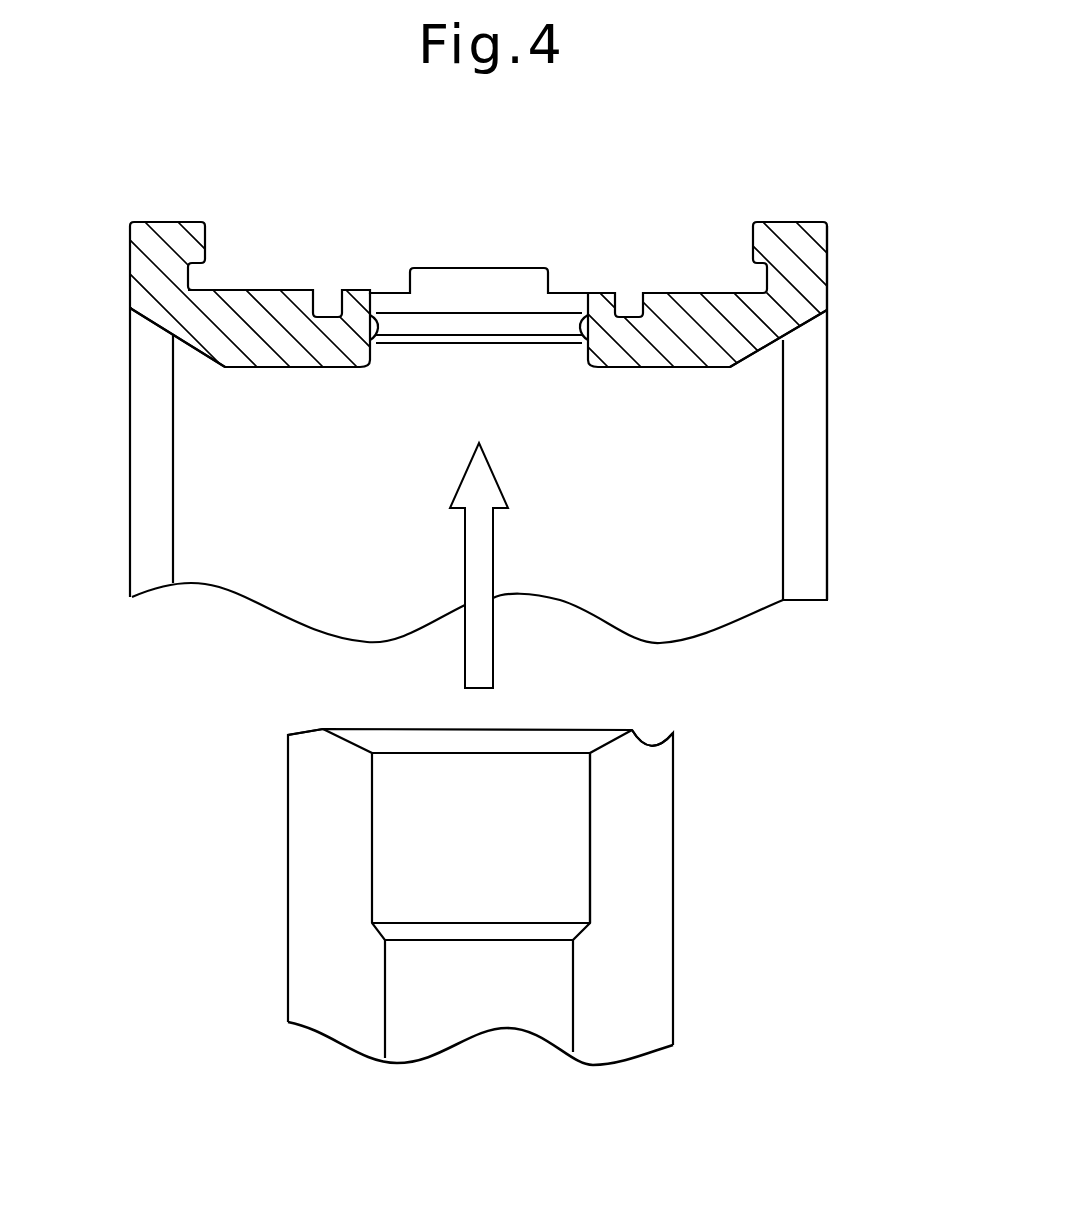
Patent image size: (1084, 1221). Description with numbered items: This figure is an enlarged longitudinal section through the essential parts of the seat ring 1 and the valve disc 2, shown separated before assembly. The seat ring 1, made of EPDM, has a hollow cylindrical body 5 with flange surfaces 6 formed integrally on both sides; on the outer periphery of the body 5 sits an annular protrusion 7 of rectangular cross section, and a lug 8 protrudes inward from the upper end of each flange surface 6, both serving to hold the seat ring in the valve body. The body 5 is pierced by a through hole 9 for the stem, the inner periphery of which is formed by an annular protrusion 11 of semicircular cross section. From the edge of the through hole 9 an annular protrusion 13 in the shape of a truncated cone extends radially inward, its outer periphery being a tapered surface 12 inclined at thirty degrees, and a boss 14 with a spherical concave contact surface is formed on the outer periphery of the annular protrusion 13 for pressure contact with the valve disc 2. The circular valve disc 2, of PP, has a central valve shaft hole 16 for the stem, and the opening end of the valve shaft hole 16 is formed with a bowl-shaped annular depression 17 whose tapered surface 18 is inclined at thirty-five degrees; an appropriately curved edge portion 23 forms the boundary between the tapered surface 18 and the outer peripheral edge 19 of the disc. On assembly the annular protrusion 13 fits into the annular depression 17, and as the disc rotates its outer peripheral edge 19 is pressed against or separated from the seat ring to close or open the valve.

The seat ring 1 is at (655, 214).
The valve disc 2 is at (722, 891).
The body 5 is at (268, 327).
The flange surface 6 is at (828, 268).
The annular protrusion 7 is at (493, 267).
The lug 8 is at (760, 243).
The through hole 9 is at (452, 360).
The annular protrusion 11 is at (590, 327).
The tapered surface 12 is at (642, 352).
The annular protrusion 13 is at (605, 357).
The boss 14 is at (277, 363).
The valve shaft hole 16 is at (493, 978).
The annular depression 17 is at (613, 745).
The tapered surface 18 is at (605, 745).
The outer peripheral edge 19 is at (309, 728).
The edge portion 23 is at (645, 751).